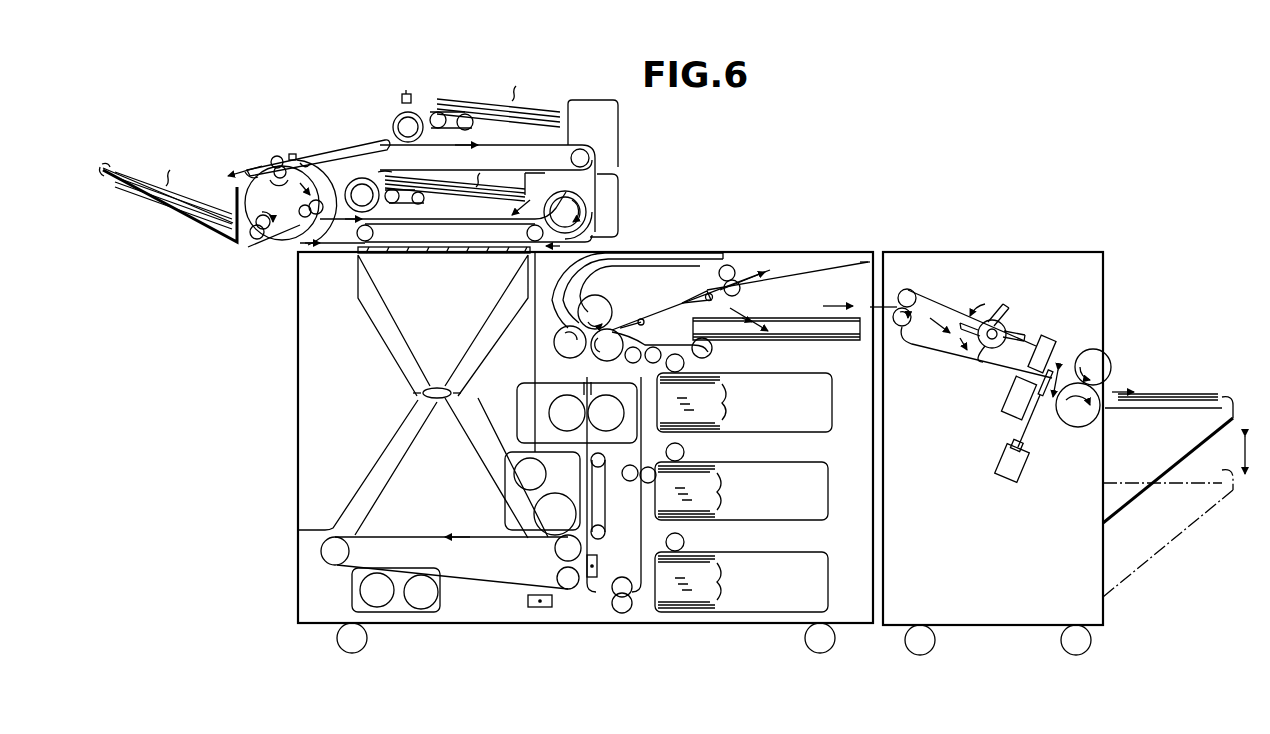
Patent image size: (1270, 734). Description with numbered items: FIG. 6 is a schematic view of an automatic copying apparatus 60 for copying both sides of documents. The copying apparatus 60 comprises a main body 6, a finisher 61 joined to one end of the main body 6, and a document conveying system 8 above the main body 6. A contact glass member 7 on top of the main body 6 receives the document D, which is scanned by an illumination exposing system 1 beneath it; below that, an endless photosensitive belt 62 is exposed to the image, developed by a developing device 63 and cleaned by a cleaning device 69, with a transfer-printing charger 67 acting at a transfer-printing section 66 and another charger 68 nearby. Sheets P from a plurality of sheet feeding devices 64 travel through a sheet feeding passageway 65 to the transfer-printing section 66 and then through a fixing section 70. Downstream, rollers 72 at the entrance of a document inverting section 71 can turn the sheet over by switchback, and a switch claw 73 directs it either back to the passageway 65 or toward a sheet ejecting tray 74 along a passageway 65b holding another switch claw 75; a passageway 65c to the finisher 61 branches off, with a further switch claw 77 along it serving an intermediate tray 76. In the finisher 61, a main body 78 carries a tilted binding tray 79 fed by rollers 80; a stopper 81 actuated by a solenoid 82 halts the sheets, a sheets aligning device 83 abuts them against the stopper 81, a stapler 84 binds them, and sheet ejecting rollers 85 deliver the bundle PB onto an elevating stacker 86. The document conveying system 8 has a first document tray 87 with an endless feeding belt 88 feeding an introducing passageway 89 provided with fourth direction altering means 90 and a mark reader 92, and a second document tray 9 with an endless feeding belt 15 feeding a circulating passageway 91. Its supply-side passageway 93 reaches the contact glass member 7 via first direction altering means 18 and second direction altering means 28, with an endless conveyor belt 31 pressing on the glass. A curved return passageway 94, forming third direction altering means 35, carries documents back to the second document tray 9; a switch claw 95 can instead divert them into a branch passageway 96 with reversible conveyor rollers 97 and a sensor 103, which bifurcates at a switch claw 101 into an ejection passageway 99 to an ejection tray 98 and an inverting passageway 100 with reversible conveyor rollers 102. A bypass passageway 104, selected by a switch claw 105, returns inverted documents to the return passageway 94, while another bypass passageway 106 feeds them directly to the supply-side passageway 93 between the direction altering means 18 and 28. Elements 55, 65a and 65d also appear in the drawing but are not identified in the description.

The illumination exposing system 1 is at (418, 398).
The main body 6 is at (758, 626).
The contact glass member 7 is at (443, 254).
The document conveying system 8 is at (620, 150).
The second document tray 9 is at (425, 186).
The endless feeding belt 15 is at (424, 200).
The first direction altering means 18 is at (360, 178).
The second direction altering means 28 is at (598, 205).
The endless conveyor belt 31 is at (383, 242).
The third direction altering means 35 is at (305, 201).
The discharge roller 55 is at (1090, 420).
The copying apparatus 60 is at (768, 172).
The finisher 61 is at (1012, 628).
The endless photosensitive belt 62 is at (462, 578).
The developing device 63 is at (395, 610).
The sheet feeding devices 64 is at (822, 402).
The sheet feeding passageway 65 is at (641, 545).
The feed path 65a is at (597, 510).
The passageway 65b is at (680, 304).
The passageway 65c is at (868, 262).
The branch path 65d is at (767, 272).
The transfer-printing section 66 is at (578, 600).
The transfer-printing charger 67 is at (600, 578).
The charger 68 is at (537, 608).
The cleaning device 69 is at (540, 512).
The fixing section 70 is at (570, 400).
The document inverting section 71 is at (645, 254).
The rollers 72 is at (596, 308).
The switch claw 73 is at (630, 322).
The sheet ejecting tray 74 is at (823, 268).
The switch claw 75 is at (714, 262).
The intermediate tray 76 is at (830, 340).
The switch claw 77 is at (765, 333).
The main body 78 is at (958, 628).
The binding tray 79 is at (933, 352).
The rollers 80 is at (912, 294).
The stopper 81 is at (1048, 400).
The solenoid 82 is at (1004, 480).
The sheets aligning device 83 is at (1006, 318).
The stapler 84 is at (1046, 340).
The sheet ejecting rollers 85 is at (1108, 368).
The stacker 86 is at (1226, 404).
The first document tray 87 is at (472, 101).
The endless feeding belt 88 is at (470, 123).
The introducing passageway 89 is at (562, 148).
The fourth direction altering means 90 is at (402, 113).
The circulating passageway 91 is at (547, 196).
The mark reader 92 is at (408, 93).
The supply-side passageway 93 is at (463, 202).
The return passageway 94 is at (328, 242).
The switch claw 95 is at (322, 202).
The branch passageway 96 is at (300, 188).
The pair of conveyor rollers 97 is at (276, 155).
The ejection tray 98 is at (162, 210).
The ejection passageway 99 is at (250, 170).
The inverting passageway 100 is at (257, 228).
The switch claw 101 is at (245, 163).
The pair of conveyor rollers 102 is at (270, 240).
The sensor 103 is at (303, 160).
The bypass passageway 104 is at (330, 148).
The switch claw 105 is at (293, 153).
The bypass passageway 106 is at (306, 232).